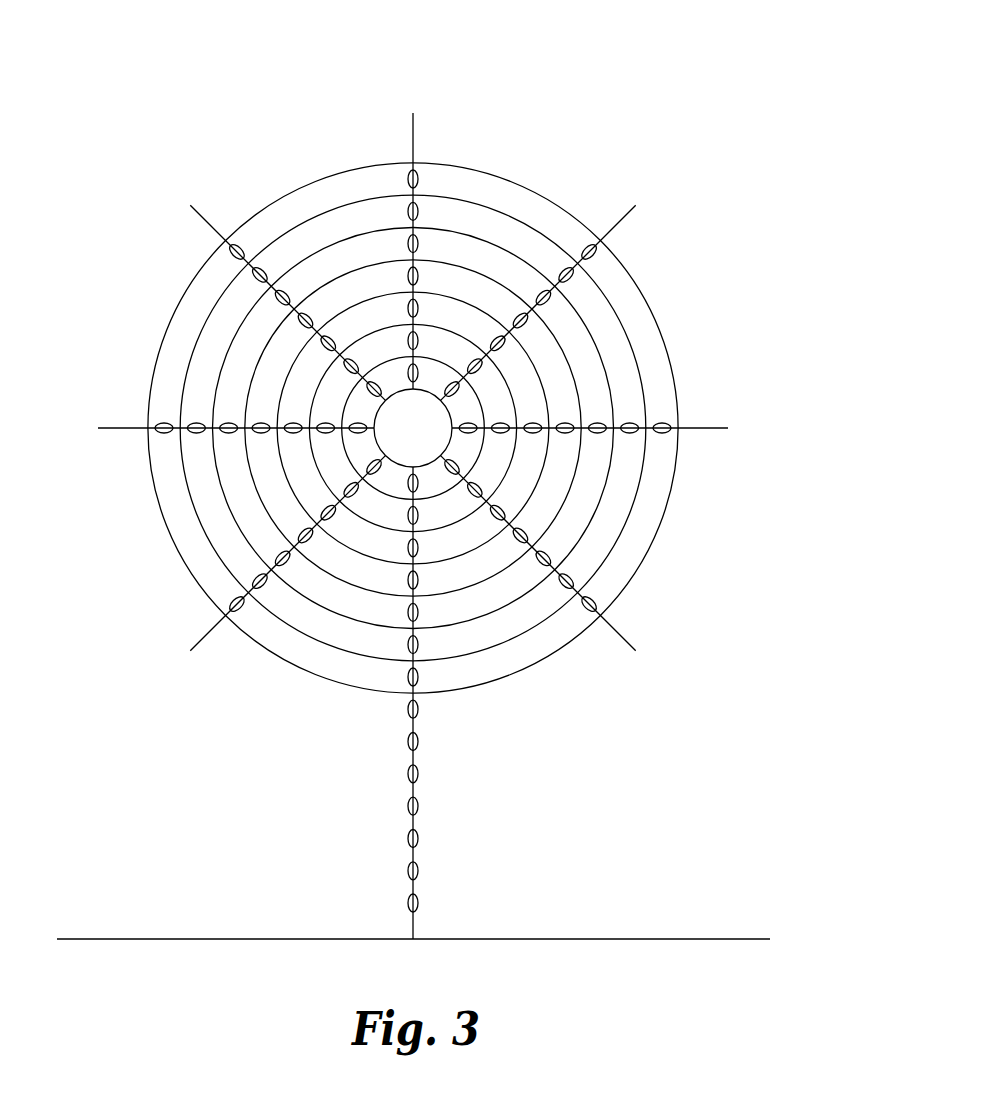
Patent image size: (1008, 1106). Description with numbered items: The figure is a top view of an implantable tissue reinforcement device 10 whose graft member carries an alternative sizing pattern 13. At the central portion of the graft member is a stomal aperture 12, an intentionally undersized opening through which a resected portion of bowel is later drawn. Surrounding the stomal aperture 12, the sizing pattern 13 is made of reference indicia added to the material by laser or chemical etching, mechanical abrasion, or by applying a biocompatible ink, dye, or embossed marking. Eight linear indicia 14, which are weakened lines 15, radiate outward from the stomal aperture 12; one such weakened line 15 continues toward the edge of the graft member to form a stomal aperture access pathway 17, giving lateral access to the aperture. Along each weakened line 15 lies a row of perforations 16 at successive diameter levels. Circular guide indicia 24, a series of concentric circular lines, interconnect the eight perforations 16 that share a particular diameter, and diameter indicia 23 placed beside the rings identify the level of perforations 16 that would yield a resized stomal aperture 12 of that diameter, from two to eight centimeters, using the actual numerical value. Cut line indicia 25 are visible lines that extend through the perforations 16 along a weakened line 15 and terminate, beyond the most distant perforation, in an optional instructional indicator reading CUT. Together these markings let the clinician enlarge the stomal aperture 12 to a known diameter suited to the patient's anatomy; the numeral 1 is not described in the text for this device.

The surgical marking template 1 is at (745, 587).
The implantable tissue reinforcement device 10 is at (770, 213).
The stomal aperture 12 is at (405, 458).
The sizing pattern 13 is at (563, 175).
The linear indicia 14 is at (140, 438).
The weakened line 15 is at (227, 443).
The perforations 16 is at (548, 303).
The stomal aperture access pathway 17 is at (430, 848).
The diameter indicia 23 is at (690, 310).
The circular guide indicia 24 is at (275, 672).
The cut line indicia 25 is at (718, 455).